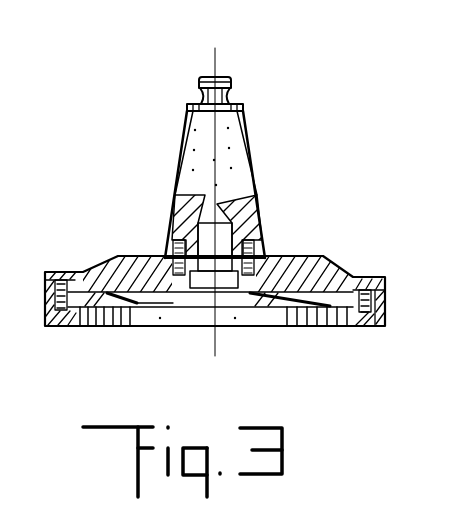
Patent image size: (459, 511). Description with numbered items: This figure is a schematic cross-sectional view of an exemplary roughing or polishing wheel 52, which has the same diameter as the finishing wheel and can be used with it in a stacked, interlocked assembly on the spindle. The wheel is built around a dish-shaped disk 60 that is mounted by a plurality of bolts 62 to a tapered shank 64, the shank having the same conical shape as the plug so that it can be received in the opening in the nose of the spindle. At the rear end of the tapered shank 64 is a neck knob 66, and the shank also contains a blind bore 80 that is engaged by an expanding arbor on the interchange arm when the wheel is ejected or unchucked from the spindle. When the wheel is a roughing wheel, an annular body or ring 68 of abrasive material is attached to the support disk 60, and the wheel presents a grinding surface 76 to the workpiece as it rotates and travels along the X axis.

The roughing or polishing wheel 52 is at (275, 200).
The disk 60 is at (303, 257).
The bolts 62 is at (177, 330).
The tapered shank 64 is at (252, 140).
The neck knob 66 is at (222, 74).
The annular body or ring 68 is at (370, 330).
The grinding surface 76 is at (63, 330).
The blind bore 80 is at (226, 333).